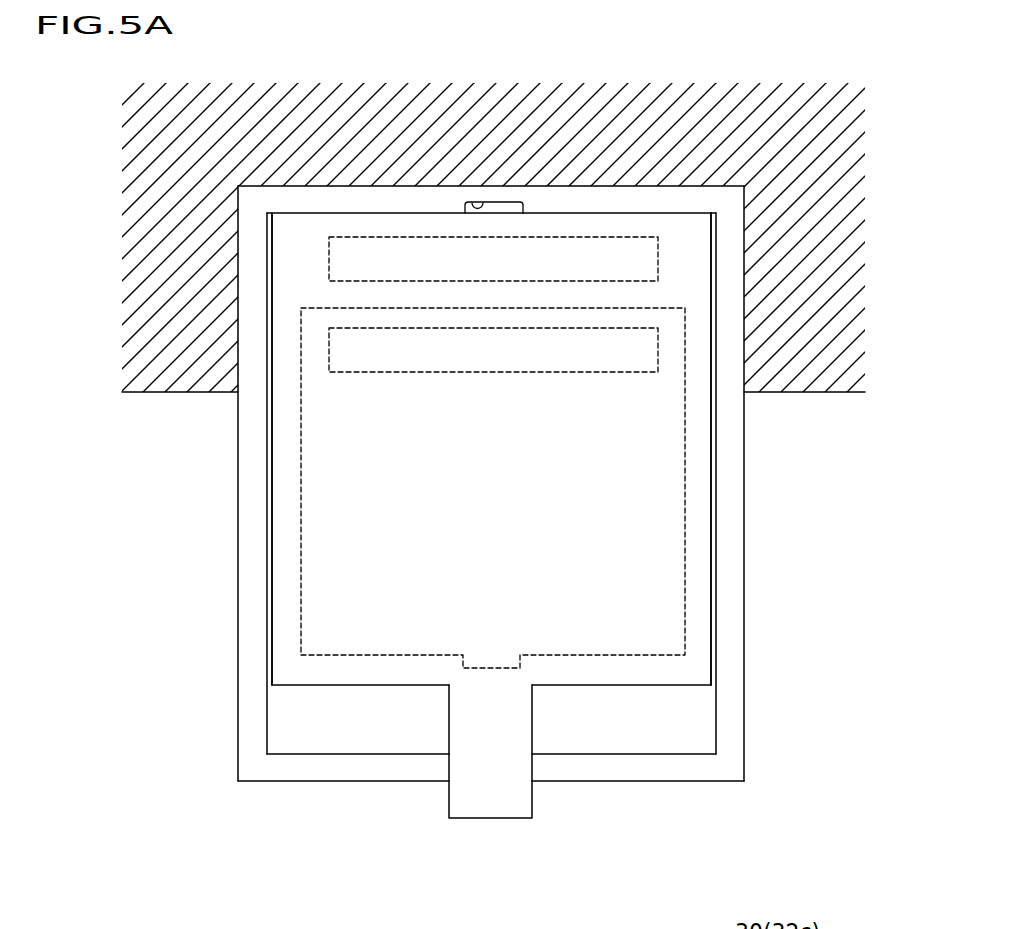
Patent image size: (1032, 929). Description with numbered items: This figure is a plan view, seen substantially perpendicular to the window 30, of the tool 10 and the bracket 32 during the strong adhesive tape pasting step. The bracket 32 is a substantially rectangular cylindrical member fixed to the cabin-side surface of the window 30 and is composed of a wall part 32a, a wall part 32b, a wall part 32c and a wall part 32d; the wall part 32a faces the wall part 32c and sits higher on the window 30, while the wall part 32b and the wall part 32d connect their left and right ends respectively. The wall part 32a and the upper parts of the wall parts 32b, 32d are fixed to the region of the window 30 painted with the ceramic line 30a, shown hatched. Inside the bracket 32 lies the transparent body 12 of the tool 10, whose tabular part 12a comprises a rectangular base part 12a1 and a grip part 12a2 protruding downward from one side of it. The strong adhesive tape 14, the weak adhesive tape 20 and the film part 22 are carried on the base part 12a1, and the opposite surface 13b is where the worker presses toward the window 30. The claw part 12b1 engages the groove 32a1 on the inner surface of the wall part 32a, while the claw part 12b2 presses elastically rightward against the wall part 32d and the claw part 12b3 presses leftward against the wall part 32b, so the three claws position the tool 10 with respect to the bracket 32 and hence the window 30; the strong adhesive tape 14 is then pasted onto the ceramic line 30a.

The tool 10 is at (470, 482).
The body 12 is at (470, 483).
The tabular part 12a is at (491, 799).
The base part 12a1 is at (392, 672).
The grip part 12a2 is at (490, 804).
The claw part 12b1 is at (510, 201).
The claw part 12b2 is at (712, 322).
The claw part 12b3 is at (267, 322).
The surface of the base part 13b is at (695, 532).
The strong adhesive tape 14 is at (345, 259).
The weak adhesive tape 20 is at (345, 349).
The film part 22 is at (340, 470).
The window 30 is at (529, 291).
The ceramic line 30a is at (843, 290).
The bracket 32 is at (506, 468).
The wall part 32a is at (491, 125).
The groove 32a1 is at (469, 201).
The wall part 32b is at (252, 668).
The wall part 32c is at (600, 770).
The wall part 32d is at (730, 652).